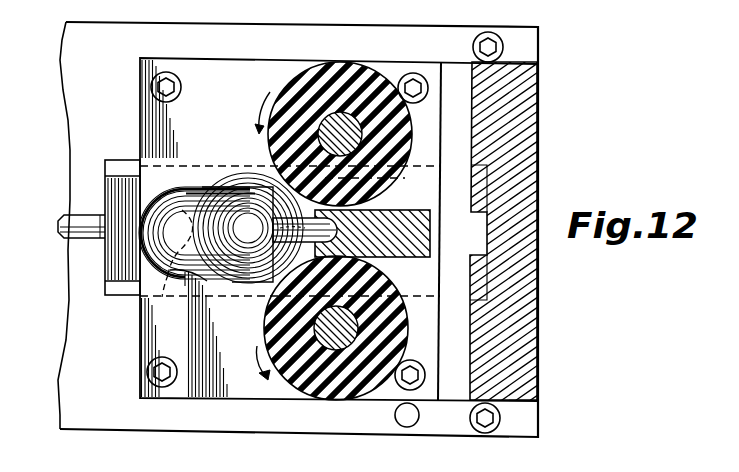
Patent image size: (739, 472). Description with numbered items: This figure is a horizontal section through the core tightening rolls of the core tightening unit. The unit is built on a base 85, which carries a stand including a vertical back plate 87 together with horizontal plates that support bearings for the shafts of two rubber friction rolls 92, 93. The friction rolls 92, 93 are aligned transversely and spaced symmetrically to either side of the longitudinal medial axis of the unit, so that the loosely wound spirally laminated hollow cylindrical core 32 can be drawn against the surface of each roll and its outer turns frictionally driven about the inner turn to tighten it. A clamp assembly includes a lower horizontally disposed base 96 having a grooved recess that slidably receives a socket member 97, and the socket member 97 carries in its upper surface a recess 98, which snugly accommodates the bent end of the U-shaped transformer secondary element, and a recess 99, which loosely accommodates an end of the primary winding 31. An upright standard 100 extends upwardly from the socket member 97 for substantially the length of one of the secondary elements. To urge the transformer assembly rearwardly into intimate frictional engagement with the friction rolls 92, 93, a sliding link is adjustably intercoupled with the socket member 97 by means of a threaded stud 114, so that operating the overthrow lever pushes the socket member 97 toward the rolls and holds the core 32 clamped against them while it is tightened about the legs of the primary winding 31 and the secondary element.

The base 85 is at (76, 51).
The base 96 is at (220, 66).
The rubber friction roll 93 is at (350, 66).
The rubber friction roll 92 is at (266, 326).
The vertical back plate 87 is at (530, 114).
The upright standard 100 is at (405, 216).
The recess 98 is at (273, 232).
The recess 99 is at (172, 225).
The core 32 is at (187, 245).
The primary winding 31 is at (167, 295).
The socket member 97 is at (118, 256).
The threaded stud 114 is at (68, 218).